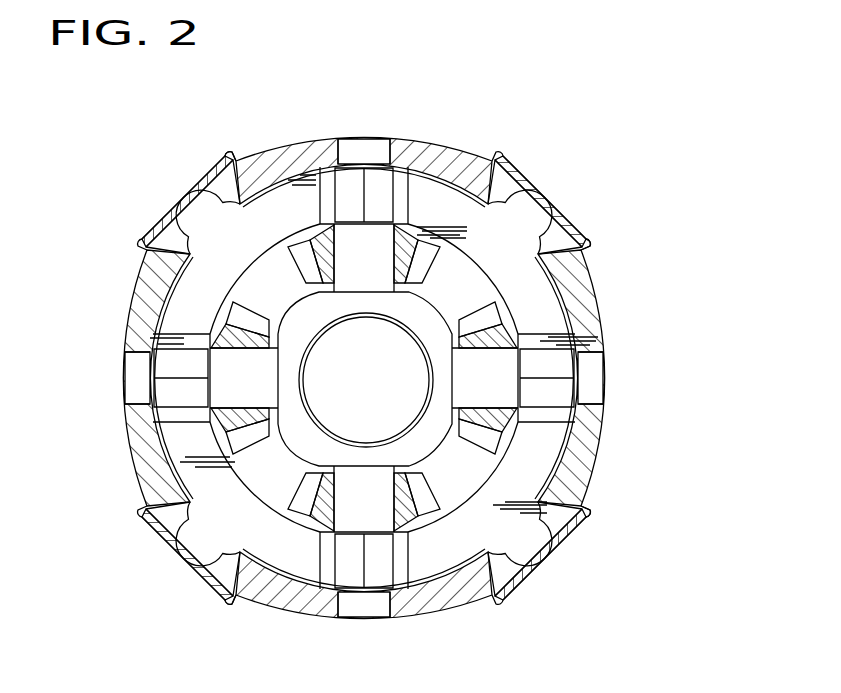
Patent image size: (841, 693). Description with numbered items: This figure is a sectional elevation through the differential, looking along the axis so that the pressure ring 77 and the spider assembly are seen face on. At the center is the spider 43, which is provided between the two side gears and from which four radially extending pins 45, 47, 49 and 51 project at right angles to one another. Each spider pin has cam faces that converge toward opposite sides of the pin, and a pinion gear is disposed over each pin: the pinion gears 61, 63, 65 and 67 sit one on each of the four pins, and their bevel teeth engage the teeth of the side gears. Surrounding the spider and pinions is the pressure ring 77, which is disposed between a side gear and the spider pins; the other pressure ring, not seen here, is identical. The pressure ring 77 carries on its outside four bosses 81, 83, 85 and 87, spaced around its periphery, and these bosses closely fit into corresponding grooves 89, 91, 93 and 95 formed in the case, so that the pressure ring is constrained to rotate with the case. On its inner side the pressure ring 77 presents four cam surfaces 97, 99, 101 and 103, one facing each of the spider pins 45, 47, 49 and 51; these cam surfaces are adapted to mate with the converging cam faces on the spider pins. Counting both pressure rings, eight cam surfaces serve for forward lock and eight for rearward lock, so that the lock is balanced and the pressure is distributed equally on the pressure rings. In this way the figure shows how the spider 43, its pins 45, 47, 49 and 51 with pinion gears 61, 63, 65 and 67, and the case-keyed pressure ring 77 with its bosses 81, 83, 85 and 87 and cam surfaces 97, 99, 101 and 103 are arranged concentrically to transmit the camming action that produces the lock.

The spider 43 is at (414, 321).
The spider pin 45 is at (256, 390).
The spider pin 47 is at (376, 265).
The spider pin 49 is at (494, 393).
The spider pin 51 is at (374, 510).
The pinion gear 61 is at (186, 461).
The pinion gear 63 is at (413, 228).
The pinion gear 65 is at (520, 440).
The pinion gear 67 is at (415, 518).
The pressure ring 77 is at (538, 306).
The boss 81 is at (195, 213).
The boss 83 is at (522, 200).
The boss 85 is at (540, 552).
The boss 87 is at (205, 585).
The groove 89 is at (236, 150).
The groove 91 is at (592, 229).
The groove 93 is at (594, 540).
The groove 95 is at (244, 604).
The cam surface 97 is at (183, 344).
The cam surface 99 is at (400, 178).
The cam surface 101 is at (546, 338).
The cam surface 103 is at (403, 585).